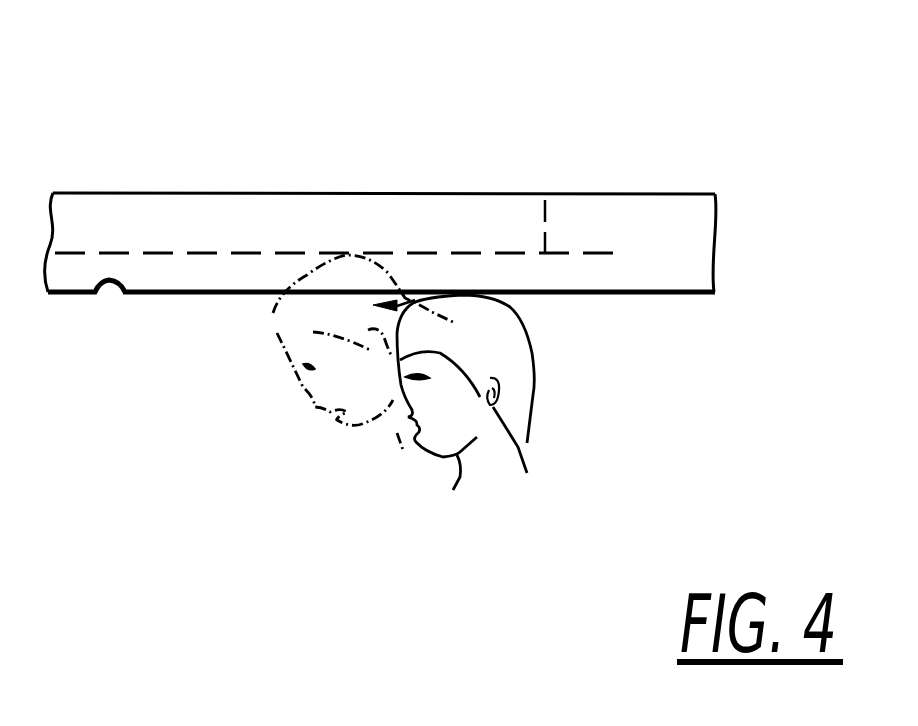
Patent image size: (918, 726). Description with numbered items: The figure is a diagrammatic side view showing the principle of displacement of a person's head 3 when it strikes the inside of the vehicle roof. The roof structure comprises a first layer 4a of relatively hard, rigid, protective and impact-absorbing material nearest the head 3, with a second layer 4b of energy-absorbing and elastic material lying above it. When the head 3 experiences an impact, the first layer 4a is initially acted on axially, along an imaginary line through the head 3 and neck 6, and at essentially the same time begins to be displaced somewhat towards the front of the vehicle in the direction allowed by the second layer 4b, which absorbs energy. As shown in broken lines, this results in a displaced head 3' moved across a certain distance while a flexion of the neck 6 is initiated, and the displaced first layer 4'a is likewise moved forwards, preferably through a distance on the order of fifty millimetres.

The head 3 is at (574, 384).
The displaced head 3' is at (293, 352).
The first layer 4a is at (638, 295).
The displaced first layer 4'a is at (576, 150).
The second layer 4b is at (663, 232).
The neck 6 is at (500, 477).